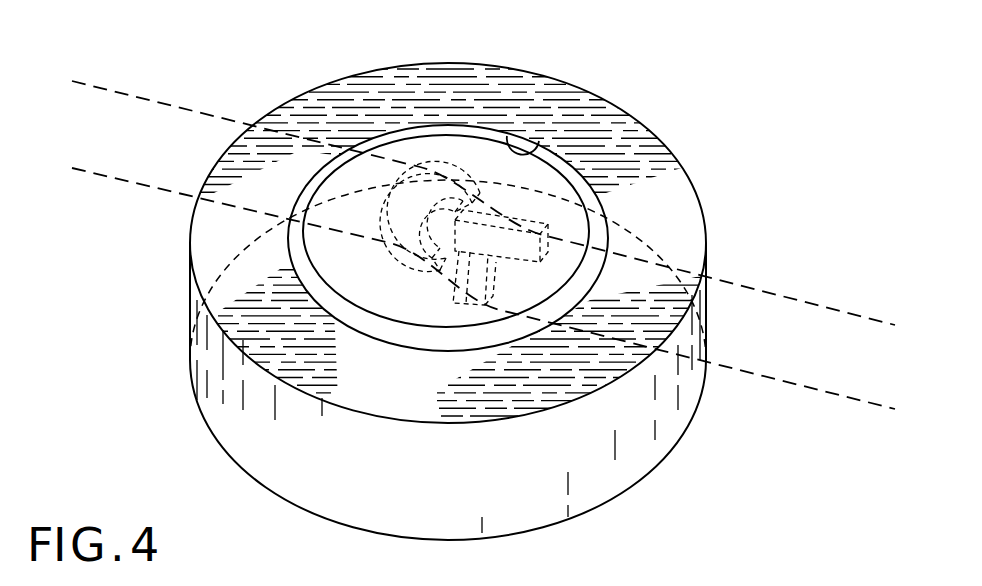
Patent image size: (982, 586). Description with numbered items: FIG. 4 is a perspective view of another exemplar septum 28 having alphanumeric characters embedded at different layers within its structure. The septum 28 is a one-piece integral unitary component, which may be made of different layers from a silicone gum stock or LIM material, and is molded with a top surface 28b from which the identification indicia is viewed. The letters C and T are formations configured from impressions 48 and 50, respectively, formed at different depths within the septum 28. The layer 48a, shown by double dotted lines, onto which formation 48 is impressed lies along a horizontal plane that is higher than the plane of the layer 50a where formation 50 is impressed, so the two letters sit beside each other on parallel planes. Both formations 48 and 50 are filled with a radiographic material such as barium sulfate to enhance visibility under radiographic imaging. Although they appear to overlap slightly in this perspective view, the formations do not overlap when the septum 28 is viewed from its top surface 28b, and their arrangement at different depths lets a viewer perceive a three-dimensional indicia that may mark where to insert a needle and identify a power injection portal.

The septum 28 is at (275, 441).
The top surface 28b is at (533, 150).
The impression 48 is at (422, 185).
The layer 48a is at (165, 147).
The impression 50 is at (523, 240).
The layer 50a is at (882, 370).